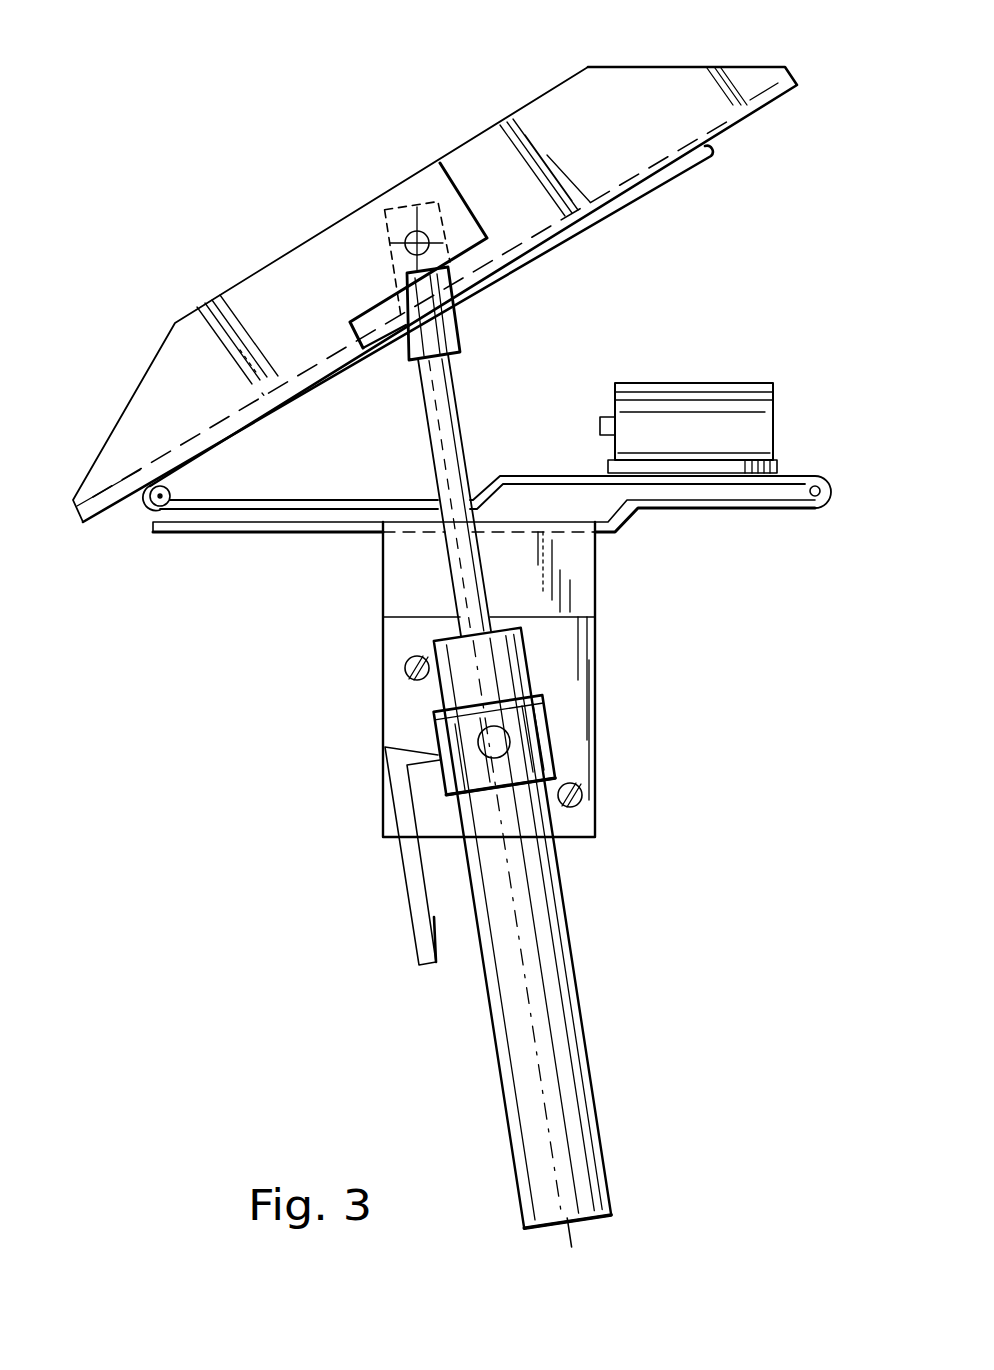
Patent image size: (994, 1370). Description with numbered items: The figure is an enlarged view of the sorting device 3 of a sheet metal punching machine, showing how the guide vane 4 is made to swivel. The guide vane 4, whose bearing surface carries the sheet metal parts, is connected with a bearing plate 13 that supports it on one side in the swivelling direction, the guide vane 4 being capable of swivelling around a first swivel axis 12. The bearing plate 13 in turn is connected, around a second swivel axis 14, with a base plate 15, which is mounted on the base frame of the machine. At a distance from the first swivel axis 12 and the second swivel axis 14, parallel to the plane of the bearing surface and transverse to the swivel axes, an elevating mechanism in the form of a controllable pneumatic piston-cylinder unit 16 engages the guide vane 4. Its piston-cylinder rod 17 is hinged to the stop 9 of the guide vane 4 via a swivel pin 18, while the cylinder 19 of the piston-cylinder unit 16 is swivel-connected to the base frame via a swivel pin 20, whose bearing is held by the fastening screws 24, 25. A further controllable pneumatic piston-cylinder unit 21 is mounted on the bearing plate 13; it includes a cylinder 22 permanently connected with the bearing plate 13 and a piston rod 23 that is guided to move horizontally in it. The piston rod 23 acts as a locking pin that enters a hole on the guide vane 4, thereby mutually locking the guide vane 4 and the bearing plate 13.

The sorting device 3 is at (268, 238).
The guide vane 4 is at (723, 125).
The stop 9 is at (670, 88).
The first swivel axis 12 is at (160, 507).
The bearing plate 13 is at (252, 506).
The second swivel axis 14 is at (828, 498).
The base plate 15 is at (345, 527).
The piston-cylinder unit 16 is at (522, 635).
The piston-cylinder rod 17 is at (460, 553).
The swivel pin 18 is at (412, 231).
The cylinder 19 is at (574, 1083).
The swivel pin 20 is at (470, 744).
The piston-cylinder unit 21 is at (699, 402).
The cylinder 22 is at (768, 430).
The piston rod 23 is at (600, 425).
The fastening screw 24 is at (406, 668).
The fastening screw 25 is at (581, 796).